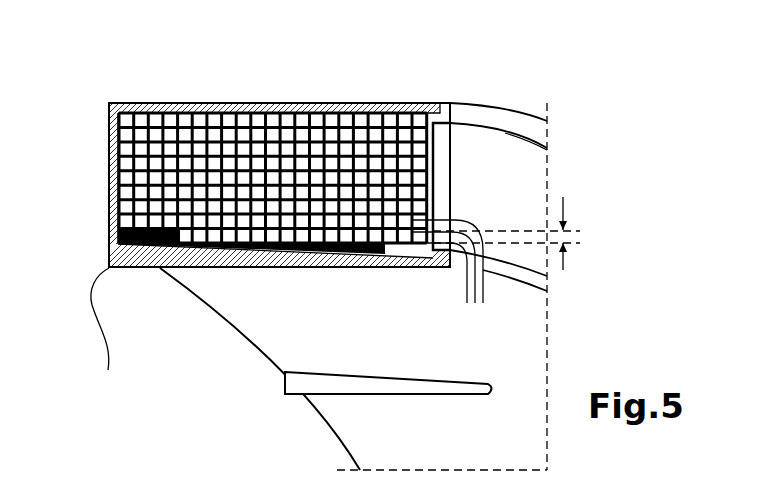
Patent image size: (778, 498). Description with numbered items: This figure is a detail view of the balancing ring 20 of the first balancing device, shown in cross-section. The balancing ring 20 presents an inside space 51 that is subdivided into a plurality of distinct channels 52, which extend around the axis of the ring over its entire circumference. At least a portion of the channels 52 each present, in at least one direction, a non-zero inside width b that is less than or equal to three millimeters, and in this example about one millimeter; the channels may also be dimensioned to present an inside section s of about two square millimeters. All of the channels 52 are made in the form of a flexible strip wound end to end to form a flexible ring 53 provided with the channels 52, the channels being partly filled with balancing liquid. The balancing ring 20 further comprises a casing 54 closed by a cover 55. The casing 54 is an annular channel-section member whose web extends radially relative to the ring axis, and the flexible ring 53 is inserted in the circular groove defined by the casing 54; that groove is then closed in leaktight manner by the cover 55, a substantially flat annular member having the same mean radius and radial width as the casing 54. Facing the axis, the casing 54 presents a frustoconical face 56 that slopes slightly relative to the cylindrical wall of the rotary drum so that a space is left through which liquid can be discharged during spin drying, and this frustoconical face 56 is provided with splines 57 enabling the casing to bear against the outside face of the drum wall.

The balancing ring 20 is at (468, 102).
The inside space 51 is at (124, 136).
The channels 52 is at (450, 278).
The flexible ring 53 is at (262, 103).
The casing 54 is at (160, 103).
The cover 55 is at (434, 148).
The frustoconical face 56 is at (232, 298).
The splines 57 is at (285, 382).
The inside section s is at (388, 251).
The inside width b is at (590, 293).